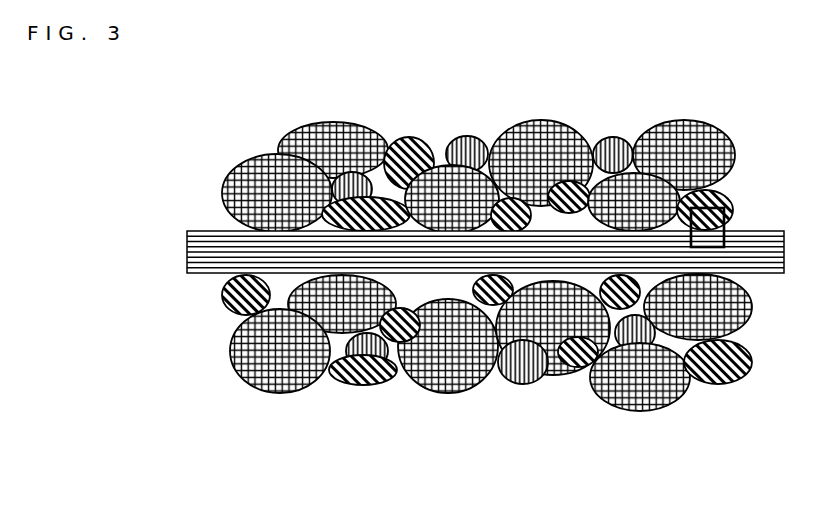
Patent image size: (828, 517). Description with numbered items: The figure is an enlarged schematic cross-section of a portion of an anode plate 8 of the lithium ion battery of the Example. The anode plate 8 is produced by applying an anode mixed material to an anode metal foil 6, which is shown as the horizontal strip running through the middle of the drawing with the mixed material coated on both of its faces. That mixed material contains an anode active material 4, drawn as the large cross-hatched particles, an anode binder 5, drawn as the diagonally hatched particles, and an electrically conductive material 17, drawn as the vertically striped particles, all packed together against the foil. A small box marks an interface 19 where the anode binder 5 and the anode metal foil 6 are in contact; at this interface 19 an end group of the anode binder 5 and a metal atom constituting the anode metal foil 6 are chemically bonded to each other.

The anode active material 4 is at (280, 390).
The anode binder 5 is at (231, 363).
The anode metal foil 6 is at (485, 186).
The anode plate 8 is at (740, 486).
The electrically conductive material 17 is at (516, 406).
The interface 19 is at (703, 207).